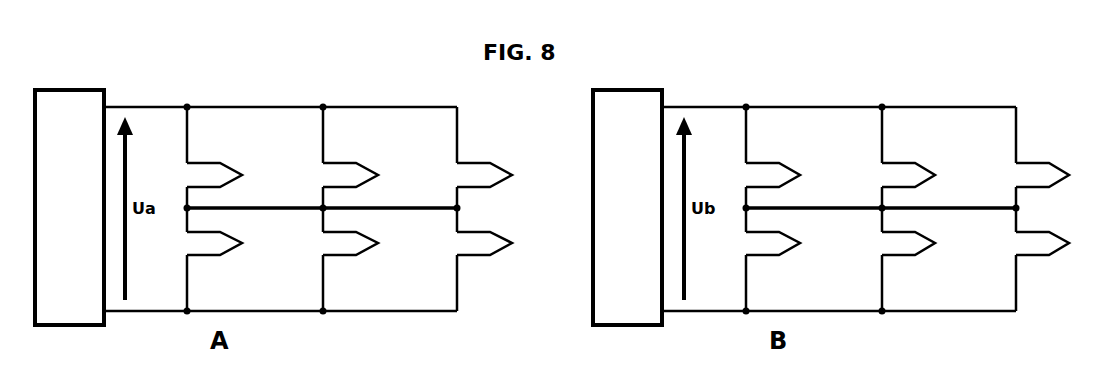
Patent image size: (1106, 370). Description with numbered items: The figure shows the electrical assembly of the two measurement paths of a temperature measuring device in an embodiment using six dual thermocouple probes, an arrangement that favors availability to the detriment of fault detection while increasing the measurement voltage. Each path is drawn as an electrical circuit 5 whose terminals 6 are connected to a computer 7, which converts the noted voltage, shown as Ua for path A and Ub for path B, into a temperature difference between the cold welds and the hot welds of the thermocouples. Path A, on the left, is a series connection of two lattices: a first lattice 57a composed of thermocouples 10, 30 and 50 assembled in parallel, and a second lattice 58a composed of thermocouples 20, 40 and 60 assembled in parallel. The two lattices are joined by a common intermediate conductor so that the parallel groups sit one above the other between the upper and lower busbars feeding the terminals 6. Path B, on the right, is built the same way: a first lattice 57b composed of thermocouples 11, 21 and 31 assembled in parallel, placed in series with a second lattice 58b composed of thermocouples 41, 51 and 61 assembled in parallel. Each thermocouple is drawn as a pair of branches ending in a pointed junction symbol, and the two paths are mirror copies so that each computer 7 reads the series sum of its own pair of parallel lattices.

The electrical circuit 5 is at (245, 58).
The terminals 6 is at (155, 105).
The computer 7 is at (76, 216).
The first lattice 57a is at (262, 115).
The first lattice 57b is at (820, 115).
The second lattice 58a is at (260, 287).
The second lattice 58b is at (818, 287).
The thermocouple 10 is at (226, 175).
The thermocouple 20 is at (226, 243).
The thermocouple 30 is at (362, 175).
The thermocouple 40 is at (362, 243).
The thermocouple 50 is at (496, 175).
The thermocouple 60 is at (496, 243).
The thermocouple 11 is at (784, 175).
The thermocouple 21 is at (919, 175).
The thermocouple 31 is at (1053, 175).
The thermocouple 41 is at (784, 243).
The thermocouple 51 is at (919, 243).
The thermocouple 61 is at (1053, 243).